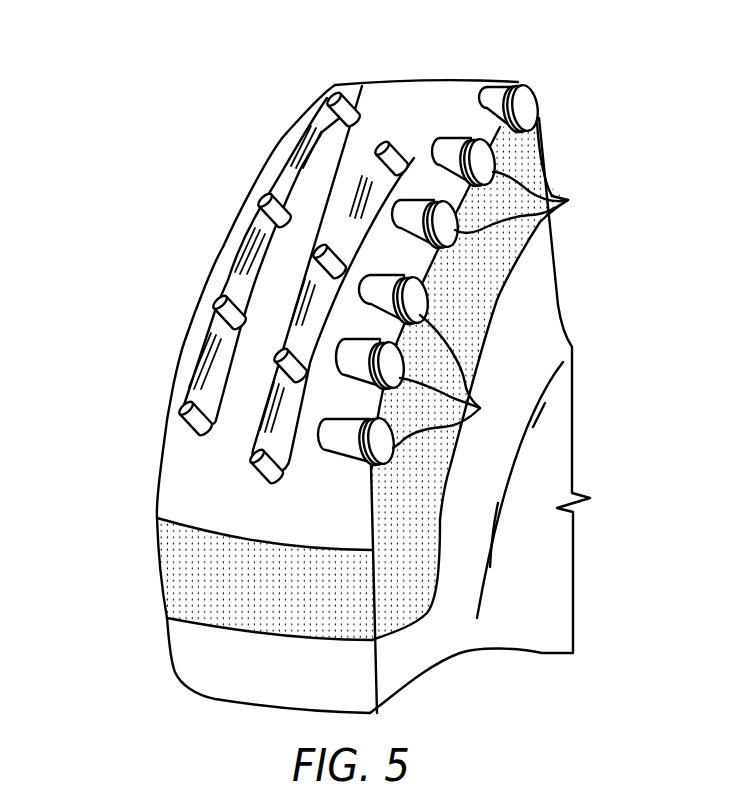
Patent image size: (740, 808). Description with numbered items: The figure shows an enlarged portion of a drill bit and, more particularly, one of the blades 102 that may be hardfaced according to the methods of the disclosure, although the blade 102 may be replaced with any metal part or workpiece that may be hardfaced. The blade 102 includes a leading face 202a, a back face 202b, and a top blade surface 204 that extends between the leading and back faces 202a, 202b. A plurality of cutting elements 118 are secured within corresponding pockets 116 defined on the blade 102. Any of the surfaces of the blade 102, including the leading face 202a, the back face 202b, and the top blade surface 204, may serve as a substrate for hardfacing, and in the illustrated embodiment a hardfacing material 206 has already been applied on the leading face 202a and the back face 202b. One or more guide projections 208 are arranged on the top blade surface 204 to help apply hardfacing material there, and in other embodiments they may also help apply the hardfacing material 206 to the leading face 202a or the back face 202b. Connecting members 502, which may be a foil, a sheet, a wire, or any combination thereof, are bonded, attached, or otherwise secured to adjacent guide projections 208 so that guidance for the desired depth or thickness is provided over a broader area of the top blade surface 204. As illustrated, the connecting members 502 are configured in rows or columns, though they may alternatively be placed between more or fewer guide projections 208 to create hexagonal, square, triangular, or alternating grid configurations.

The blade 102 is at (600, 98).
The top blade surface 204 is at (413, 88).
The cutting elements 118 is at (430, 142).
The pockets 116 is at (497, 310).
The hardfacing material 206 is at (503, 263).
The leading face 202a is at (545, 326).
The back face 202b is at (157, 492).
The guide projections 208 is at (378, 154).
The connecting members 502 is at (296, 156).